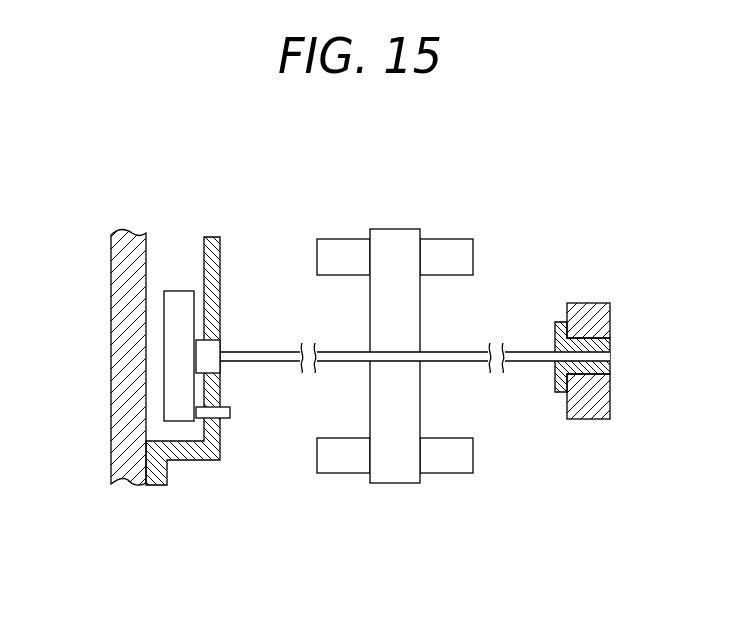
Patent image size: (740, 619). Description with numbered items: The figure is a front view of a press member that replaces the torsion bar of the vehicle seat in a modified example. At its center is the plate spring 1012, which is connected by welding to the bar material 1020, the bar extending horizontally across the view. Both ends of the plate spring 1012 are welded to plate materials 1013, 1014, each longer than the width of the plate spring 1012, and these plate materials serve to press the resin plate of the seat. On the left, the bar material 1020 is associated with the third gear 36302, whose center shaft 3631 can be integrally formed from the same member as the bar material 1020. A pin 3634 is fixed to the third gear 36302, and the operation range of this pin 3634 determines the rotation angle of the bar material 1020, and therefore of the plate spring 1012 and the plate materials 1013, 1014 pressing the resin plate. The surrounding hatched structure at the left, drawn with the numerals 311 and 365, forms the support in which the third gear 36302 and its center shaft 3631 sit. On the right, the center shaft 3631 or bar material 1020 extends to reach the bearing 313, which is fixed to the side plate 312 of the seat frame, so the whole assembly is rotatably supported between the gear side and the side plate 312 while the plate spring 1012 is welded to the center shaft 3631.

The housing wall 311 is at (118, 255).
The bracket 365 is at (187, 461).
The third gear 36302 is at (187, 297).
The center shaft 3631 is at (220, 354).
The pin 3634 is at (228, 421).
The plate material 1013 is at (453, 238).
The plate material 1014 is at (451, 474).
The plate spring 1012 is at (395, 484).
The bar material 1020 is at (453, 351).
The side plate 312 is at (605, 319).
The bearing 313 is at (605, 366).